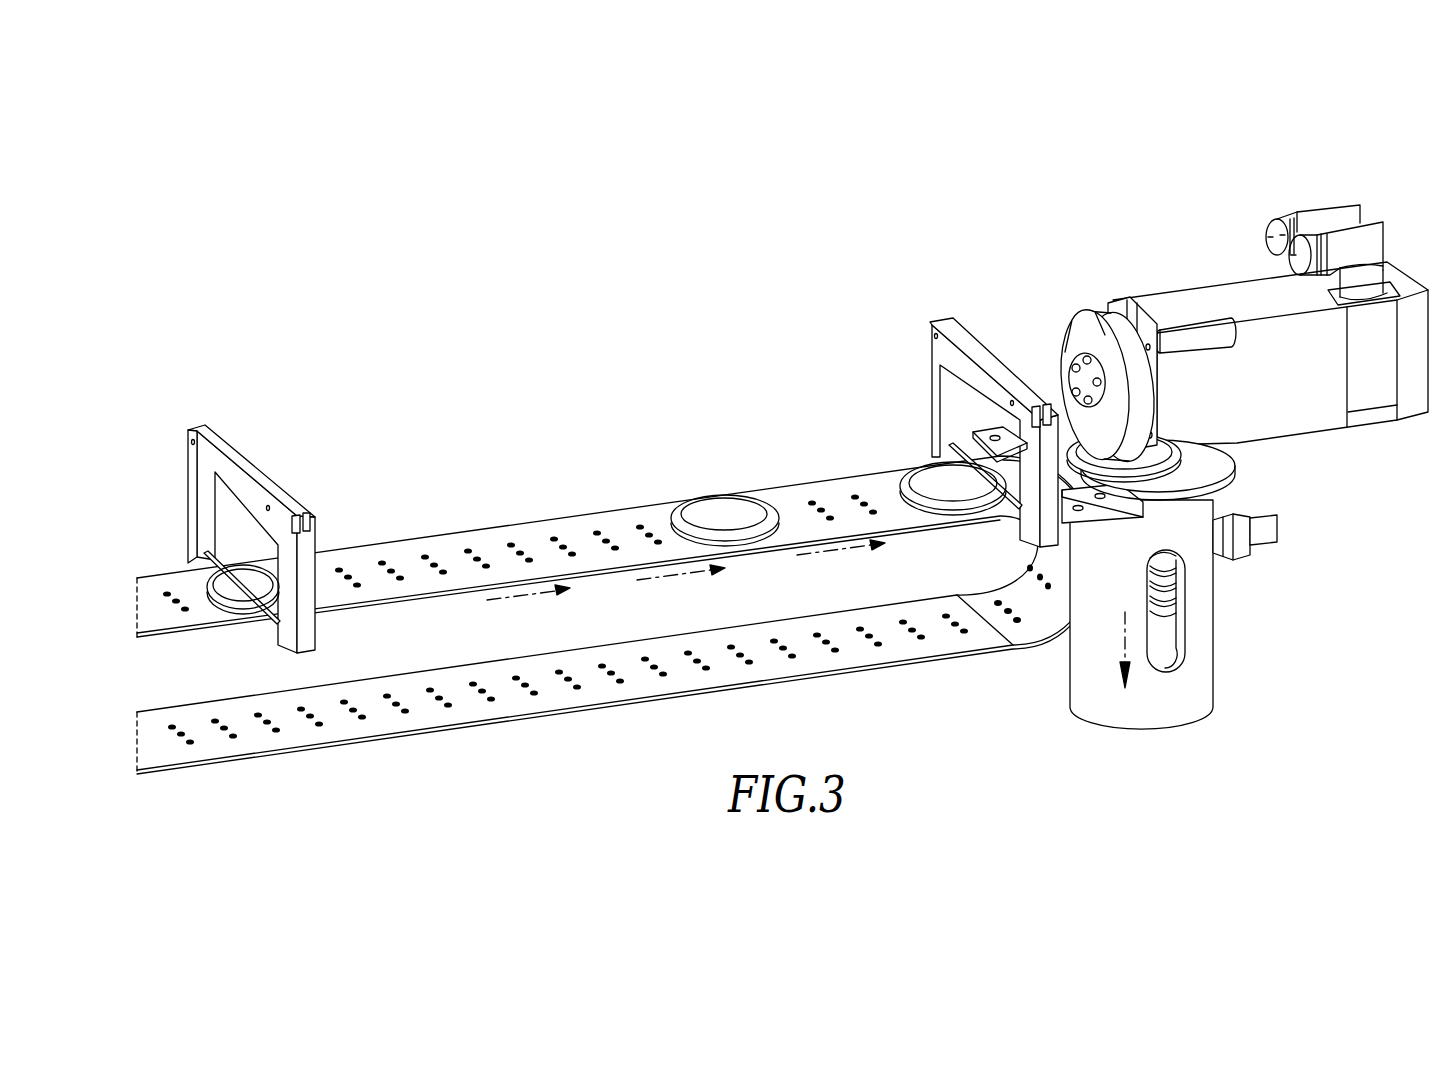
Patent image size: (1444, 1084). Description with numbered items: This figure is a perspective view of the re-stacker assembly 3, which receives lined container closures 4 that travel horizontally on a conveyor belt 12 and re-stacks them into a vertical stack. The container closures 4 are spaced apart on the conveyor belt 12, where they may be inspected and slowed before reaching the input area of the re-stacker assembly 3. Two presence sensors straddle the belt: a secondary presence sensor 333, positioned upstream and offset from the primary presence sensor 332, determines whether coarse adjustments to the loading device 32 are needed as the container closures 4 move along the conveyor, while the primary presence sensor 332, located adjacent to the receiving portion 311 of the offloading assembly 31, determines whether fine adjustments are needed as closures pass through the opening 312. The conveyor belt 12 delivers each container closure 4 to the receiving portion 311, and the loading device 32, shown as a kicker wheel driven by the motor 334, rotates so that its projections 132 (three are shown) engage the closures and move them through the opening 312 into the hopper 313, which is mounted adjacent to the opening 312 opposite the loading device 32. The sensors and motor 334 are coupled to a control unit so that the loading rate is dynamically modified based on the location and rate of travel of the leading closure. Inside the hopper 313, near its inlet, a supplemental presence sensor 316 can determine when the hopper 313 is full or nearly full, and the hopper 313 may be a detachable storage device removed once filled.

The re-stacker assembly 3 is at (708, 391).
The container closures 4 is at (727, 544).
The conveyor belt 12 is at (616, 615).
The offloading assembly 31 is at (1237, 487).
The loading device 32 is at (1051, 319).
The projections 132 is at (1134, 359).
The receiving portion 311 is at (1020, 404).
The opening 312 is at (1185, 444).
The hopper 313 is at (1177, 614).
The supplemental presence sensor 316 is at (1269, 545).
The primary presence sensor 332 is at (963, 432).
The secondary presence sensor 333 is at (251, 528).
The motor 334 is at (1270, 325).